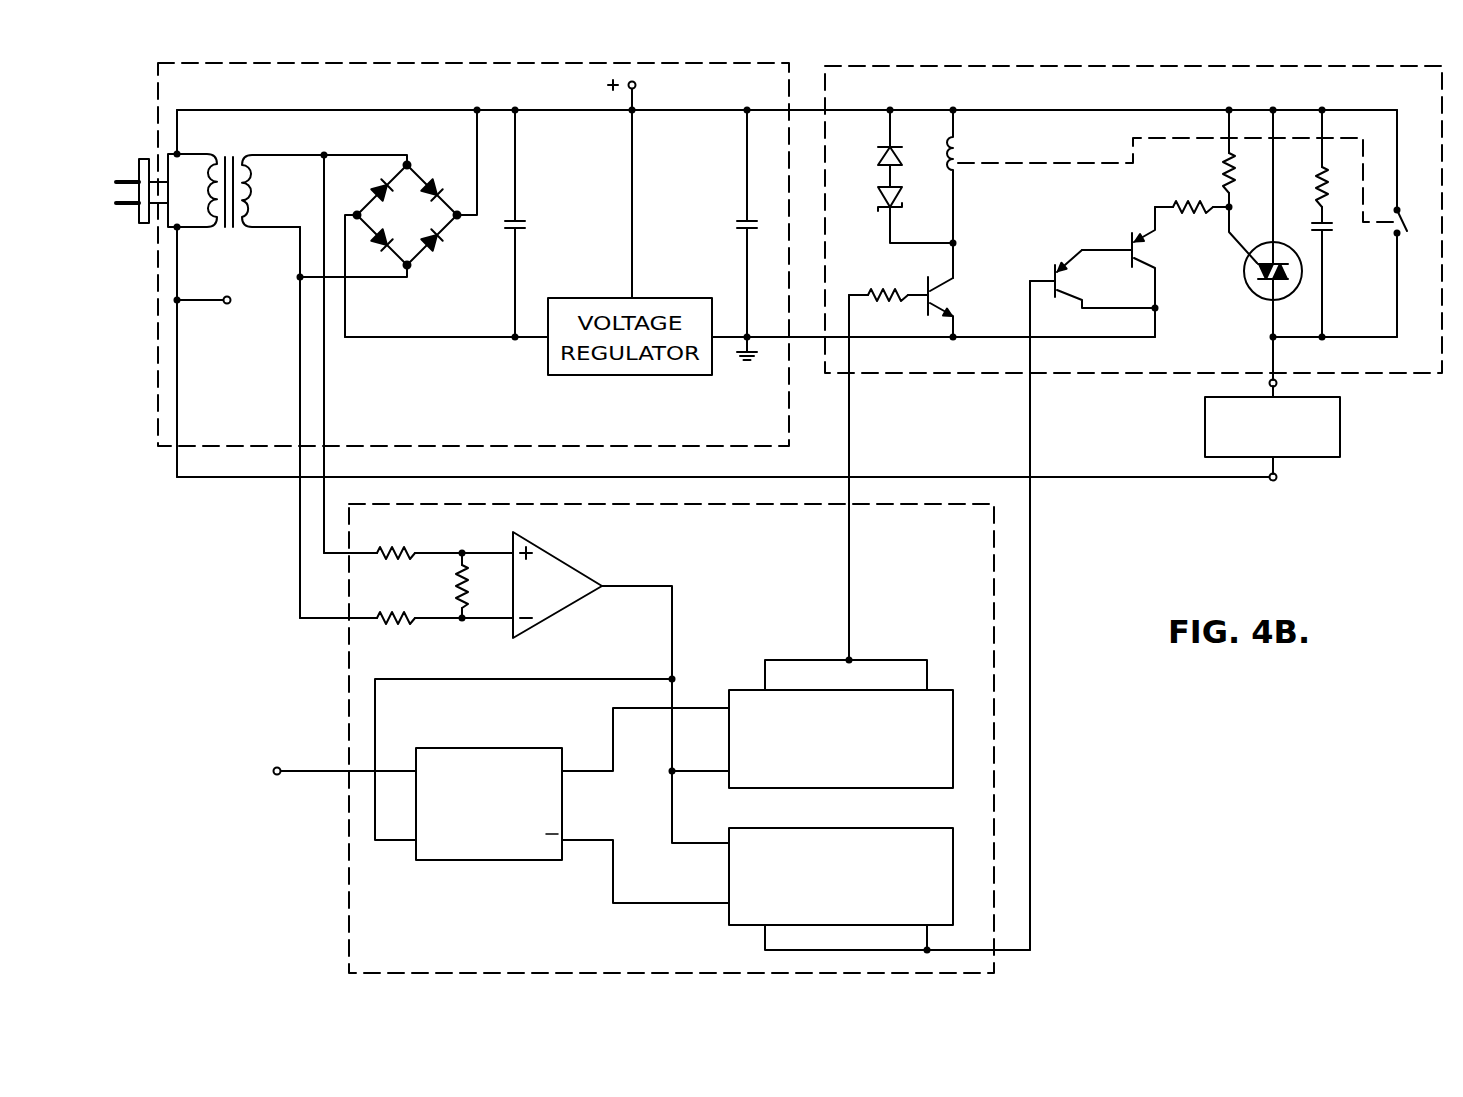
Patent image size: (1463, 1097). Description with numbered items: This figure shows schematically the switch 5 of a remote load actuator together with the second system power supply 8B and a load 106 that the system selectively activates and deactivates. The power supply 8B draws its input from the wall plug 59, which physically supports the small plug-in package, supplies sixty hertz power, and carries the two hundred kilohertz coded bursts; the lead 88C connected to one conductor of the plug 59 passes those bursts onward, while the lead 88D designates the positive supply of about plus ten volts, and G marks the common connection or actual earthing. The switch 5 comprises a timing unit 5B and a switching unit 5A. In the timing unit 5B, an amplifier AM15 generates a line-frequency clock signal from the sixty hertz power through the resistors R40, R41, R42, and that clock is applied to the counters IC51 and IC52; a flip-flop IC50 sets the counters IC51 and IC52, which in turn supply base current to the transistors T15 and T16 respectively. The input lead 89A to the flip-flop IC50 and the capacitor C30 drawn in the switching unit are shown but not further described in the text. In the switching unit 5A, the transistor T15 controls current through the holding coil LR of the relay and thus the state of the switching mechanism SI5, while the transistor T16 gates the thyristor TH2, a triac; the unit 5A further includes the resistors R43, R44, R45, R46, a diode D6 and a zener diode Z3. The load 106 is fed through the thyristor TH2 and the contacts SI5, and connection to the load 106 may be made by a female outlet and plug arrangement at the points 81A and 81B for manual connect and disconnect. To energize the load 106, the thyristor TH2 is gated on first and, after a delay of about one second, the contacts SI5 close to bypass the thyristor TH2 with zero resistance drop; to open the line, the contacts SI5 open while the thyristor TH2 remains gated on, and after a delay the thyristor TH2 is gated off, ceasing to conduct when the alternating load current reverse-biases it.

The second system power supply 8B is at (157, 417).
The wall plug 59 is at (139, 163).
The point or lead 88C is at (227, 304).
The point or lead 88D is at (636, 85).
The common connection or earthing G is at (757, 354).
The switching unit 5A is at (1393, 375).
The diode D6 is at (878, 150).
The zener diode Z3 is at (880, 200).
The coil LR is at (960, 152).
The resistor R43 is at (897, 266).
The transistor T15 is at (955, 286).
The transistor T16 is at (1068, 262).
The resistor R44 is at (1197, 212).
The resistor R45 is at (1222, 165).
The switching thyristor TH2 is at (1244, 286).
The resistor R46 is at (1315, 185).
The capacitor C30 is at (1326, 230).
The switching mechanism SI5 is at (1405, 224).
The point 81B is at (1268, 383).
The load 106 is at (1298, 459).
The point 81A is at (1275, 482).
The switch 5 is at (872, 503).
The timing unit 5B is at (994, 740).
The resistor R40 is at (404, 548).
The resistor R41 is at (396, 624).
The resistor R42 is at (455, 586).
The amplifier AM15 is at (566, 560).
The input terminal 89A is at (290, 737).
The flip-flop IC50 is at (482, 862).
The counter IC51 is at (943, 688).
The counter IC52 is at (728, 921).